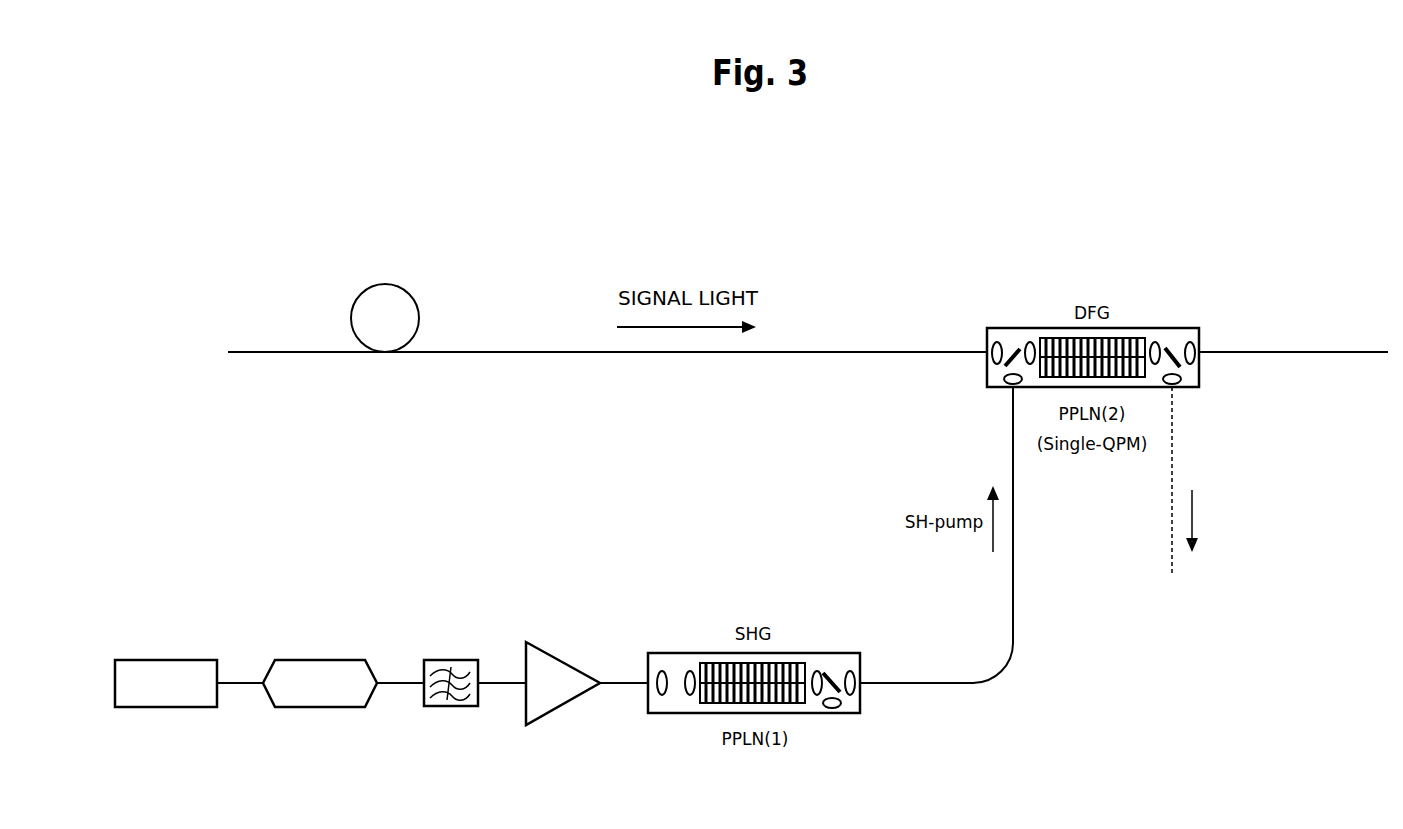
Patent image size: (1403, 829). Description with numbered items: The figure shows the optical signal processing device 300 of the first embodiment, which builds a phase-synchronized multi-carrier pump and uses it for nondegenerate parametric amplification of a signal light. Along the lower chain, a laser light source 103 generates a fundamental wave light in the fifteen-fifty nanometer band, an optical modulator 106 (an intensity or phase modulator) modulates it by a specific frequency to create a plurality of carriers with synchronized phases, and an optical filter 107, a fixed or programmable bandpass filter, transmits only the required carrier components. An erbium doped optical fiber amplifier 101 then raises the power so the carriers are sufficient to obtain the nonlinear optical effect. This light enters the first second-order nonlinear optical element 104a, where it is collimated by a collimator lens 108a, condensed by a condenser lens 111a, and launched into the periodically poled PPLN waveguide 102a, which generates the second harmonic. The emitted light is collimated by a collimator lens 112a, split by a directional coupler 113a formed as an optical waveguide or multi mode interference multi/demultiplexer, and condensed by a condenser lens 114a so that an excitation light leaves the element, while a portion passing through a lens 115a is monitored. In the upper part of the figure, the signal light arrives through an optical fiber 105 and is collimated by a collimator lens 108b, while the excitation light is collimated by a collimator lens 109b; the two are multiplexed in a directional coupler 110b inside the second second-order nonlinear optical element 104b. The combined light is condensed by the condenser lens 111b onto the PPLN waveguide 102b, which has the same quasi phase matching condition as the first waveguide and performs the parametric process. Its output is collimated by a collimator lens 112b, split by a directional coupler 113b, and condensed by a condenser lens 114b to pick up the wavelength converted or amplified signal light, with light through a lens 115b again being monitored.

The optical signal processing device 300 is at (1273, 222).
The erbium doped optical fiber amplifier 101 is at (561, 662).
The PPLN waveguide 102a is at (763, 630).
The PPLN waveguide 102b is at (1103, 306).
The light source 103 is at (166, 660).
The first second-order nonlinear optical element 104a is at (712, 663).
The second second-order nonlinear optical element 104b is at (1058, 338).
The optical fiber 105 is at (513, 352).
The optical modulator 106 is at (320, 660).
The optical filter 107 is at (451, 660).
The collimator lens 108a is at (662, 697).
The collimator lens 108b is at (989, 362).
The collimator lens 109b is at (1006, 383).
The directional coupler 110b is at (989, 342).
The condenser lens 111a is at (688, 671).
The condenser lens 111b is at (1028, 342).
The collimator lens 112a is at (820, 672).
The collimator lens 112b is at (1158, 342).
The directional coupler 113a is at (838, 676).
The directional coupler 113b is at (1167, 350).
The condenser lens 114a is at (855, 690).
The condenser lens 114b is at (1198, 360).
The lens 115a is at (838, 708).
The lens 115b is at (1178, 385).